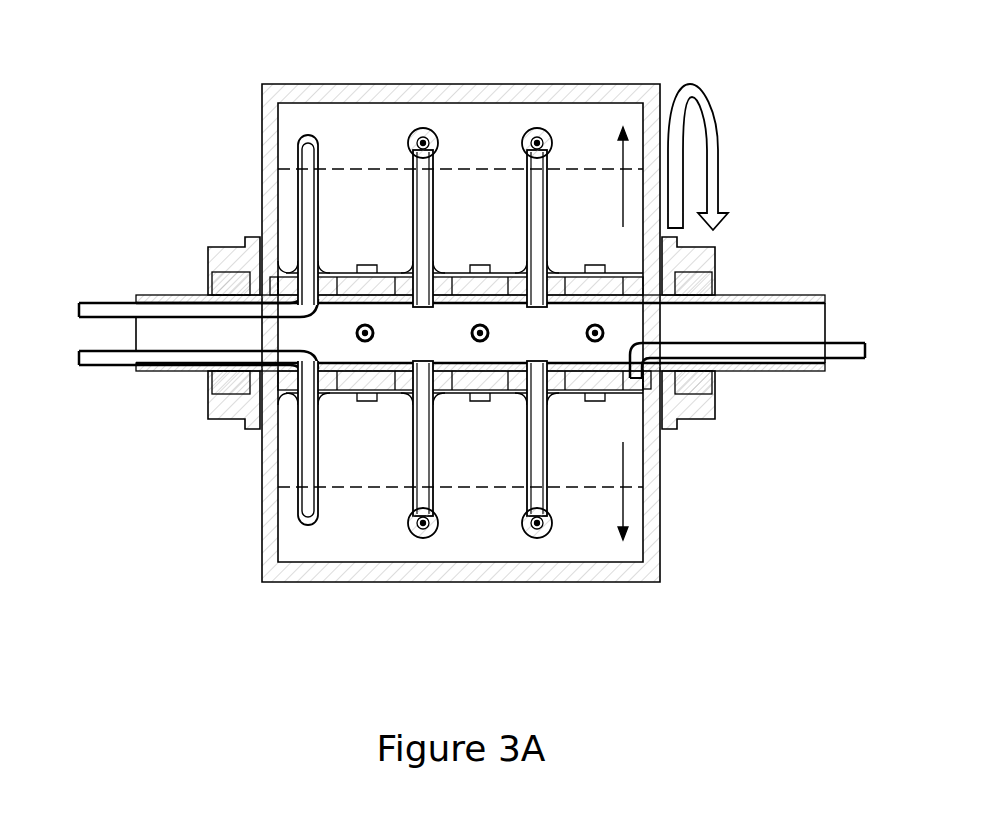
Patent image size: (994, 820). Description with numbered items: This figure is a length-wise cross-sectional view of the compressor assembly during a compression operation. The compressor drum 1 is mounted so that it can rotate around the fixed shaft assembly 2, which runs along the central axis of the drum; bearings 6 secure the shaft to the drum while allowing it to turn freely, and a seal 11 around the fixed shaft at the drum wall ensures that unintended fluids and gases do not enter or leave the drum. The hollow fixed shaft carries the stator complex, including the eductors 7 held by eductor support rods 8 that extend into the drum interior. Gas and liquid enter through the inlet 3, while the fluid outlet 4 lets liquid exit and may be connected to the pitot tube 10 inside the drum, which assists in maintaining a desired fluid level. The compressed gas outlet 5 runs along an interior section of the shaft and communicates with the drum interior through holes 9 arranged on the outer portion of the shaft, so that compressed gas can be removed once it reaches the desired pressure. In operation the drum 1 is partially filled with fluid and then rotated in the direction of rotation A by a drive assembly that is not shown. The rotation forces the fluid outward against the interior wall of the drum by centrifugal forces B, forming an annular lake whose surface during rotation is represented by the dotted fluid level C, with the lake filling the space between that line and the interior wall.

The compressor drum 1 is at (303, 84).
The fixed shaft assembly 2 is at (160, 295).
The inlet 3 is at (136, 333).
The fluid outlet 4 is at (79, 310).
The compressed gas outlet 5 is at (771, 432).
The bearing 6 is at (210, 387).
The eductor 7 is at (455, 280).
The eductor support rod 8 is at (413, 205).
The hole 9 is at (632, 378).
The pitot tube 10 is at (297, 512).
The seal 11 is at (273, 290).
The direction of rotation A is at (720, 147).
The centrifugal forces B is at (643, 152).
The fluid level C is at (460, 165).